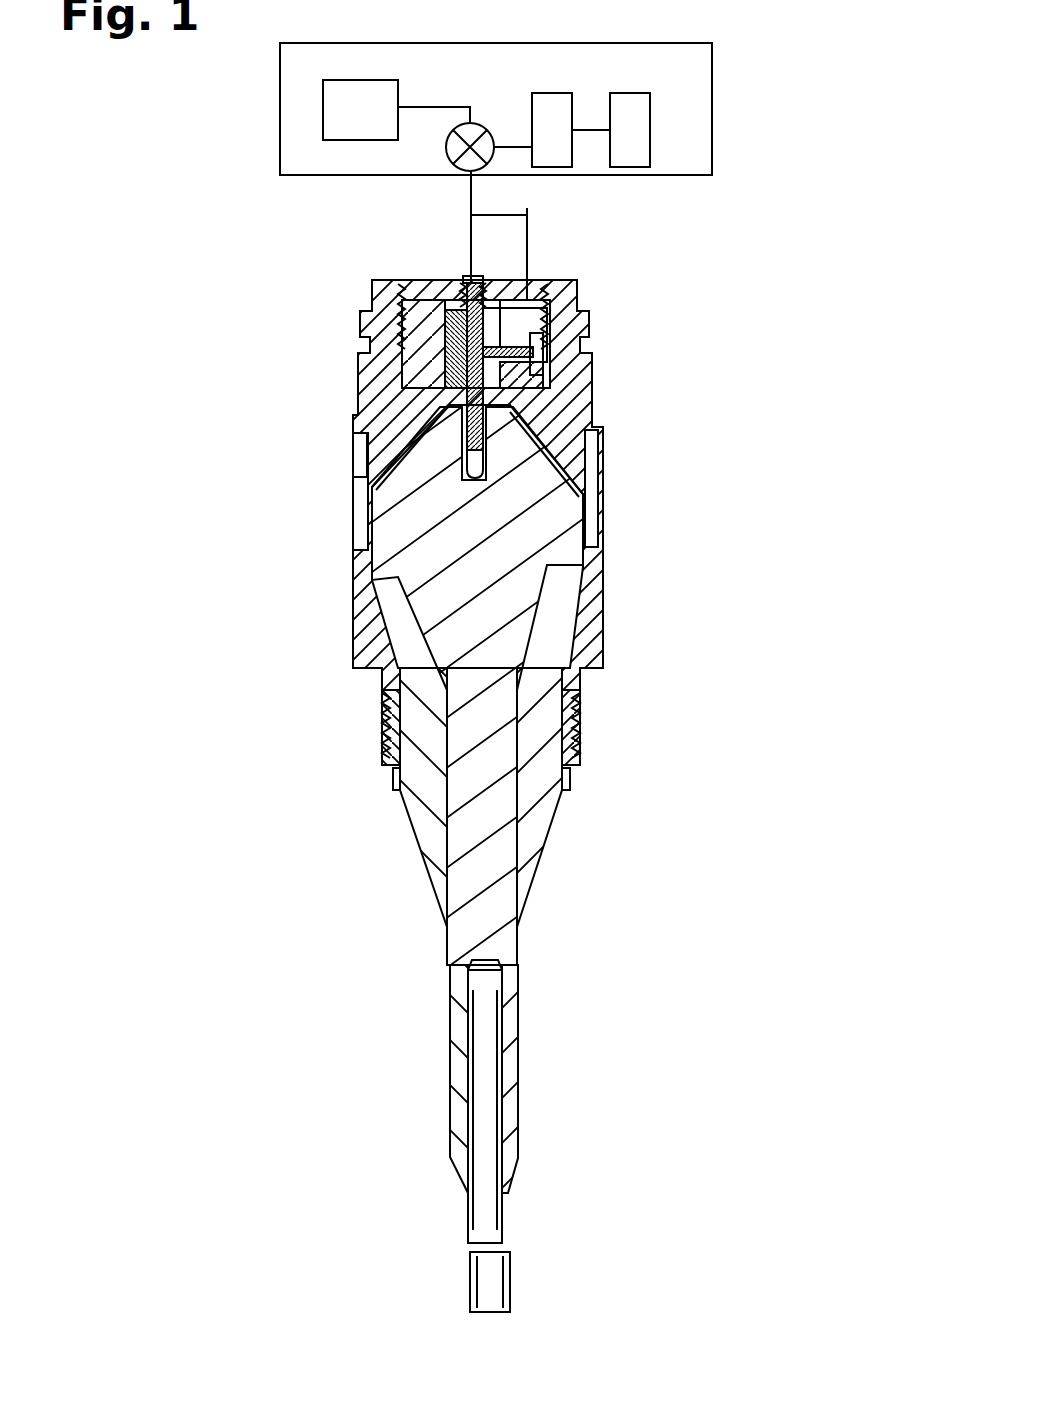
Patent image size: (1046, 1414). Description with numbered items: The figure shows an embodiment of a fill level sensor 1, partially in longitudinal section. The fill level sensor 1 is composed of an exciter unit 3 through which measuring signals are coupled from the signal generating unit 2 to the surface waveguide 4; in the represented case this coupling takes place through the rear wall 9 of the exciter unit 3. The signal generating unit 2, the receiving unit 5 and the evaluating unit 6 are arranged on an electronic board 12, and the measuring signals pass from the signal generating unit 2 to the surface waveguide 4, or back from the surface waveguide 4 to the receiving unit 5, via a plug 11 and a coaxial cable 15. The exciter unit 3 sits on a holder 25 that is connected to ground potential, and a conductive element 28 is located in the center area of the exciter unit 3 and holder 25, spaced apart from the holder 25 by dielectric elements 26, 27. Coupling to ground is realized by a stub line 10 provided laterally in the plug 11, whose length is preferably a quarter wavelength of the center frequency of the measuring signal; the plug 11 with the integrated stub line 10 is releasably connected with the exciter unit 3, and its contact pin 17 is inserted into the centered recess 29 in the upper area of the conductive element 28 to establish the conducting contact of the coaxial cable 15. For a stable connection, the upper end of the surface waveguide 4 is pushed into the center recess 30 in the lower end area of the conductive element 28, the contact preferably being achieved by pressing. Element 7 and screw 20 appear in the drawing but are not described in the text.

The fill level sensor 1 is at (343, 1028).
The signal generating unit 2 is at (365, 100).
The exciter unit 3 is at (688, 548).
The surface waveguide 4 is at (490, 1283).
The receiving unit 5 is at (548, 117).
The evaluating unit 6 is at (625, 117).
The electrical connection element 7 is at (570, 318).
The rear wall 9 is at (525, 272).
The stub line 10 is at (568, 319).
The plug 11 is at (410, 278).
The electronic board 12 is at (672, 130).
The coaxial cable 15 is at (470, 200).
The contact pin 17 is at (500, 422).
The terminal screw 20 is at (450, 290).
The holder 25 is at (577, 380).
The dielectric element 26 is at (590, 513).
The dielectric element 27 is at (538, 790).
The conductive element 28 is at (480, 923).
The centered recess 29 is at (432, 479).
The center recess 30 is at (480, 1120).